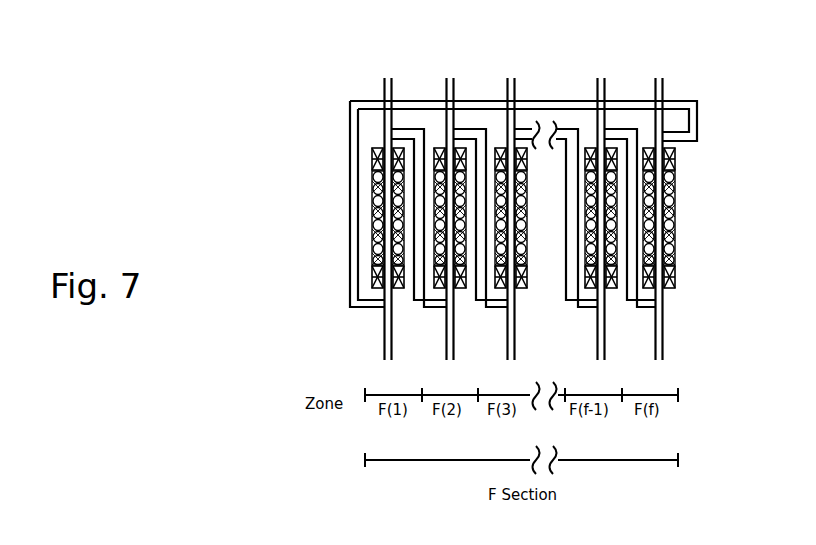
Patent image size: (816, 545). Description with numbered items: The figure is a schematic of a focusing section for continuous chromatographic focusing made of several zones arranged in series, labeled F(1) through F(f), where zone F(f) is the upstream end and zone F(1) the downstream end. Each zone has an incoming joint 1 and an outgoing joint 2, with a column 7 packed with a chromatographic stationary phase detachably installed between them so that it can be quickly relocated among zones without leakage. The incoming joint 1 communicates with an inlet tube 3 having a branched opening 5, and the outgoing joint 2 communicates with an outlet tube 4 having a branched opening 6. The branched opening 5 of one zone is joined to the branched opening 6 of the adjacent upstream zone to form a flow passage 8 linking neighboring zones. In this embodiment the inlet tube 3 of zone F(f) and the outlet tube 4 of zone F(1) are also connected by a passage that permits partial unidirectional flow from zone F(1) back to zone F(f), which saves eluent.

The incoming joint 1 is at (372, 162).
The outgoing joint 2 is at (372, 275).
The inlet tube 3 is at (384, 87).
The outlet tube 4 is at (384, 347).
The branched opening 5 is at (396, 128).
The branched opening 6 is at (376, 299).
The column 7 is at (377, 210).
The flow passage 8 is at (420, 128).